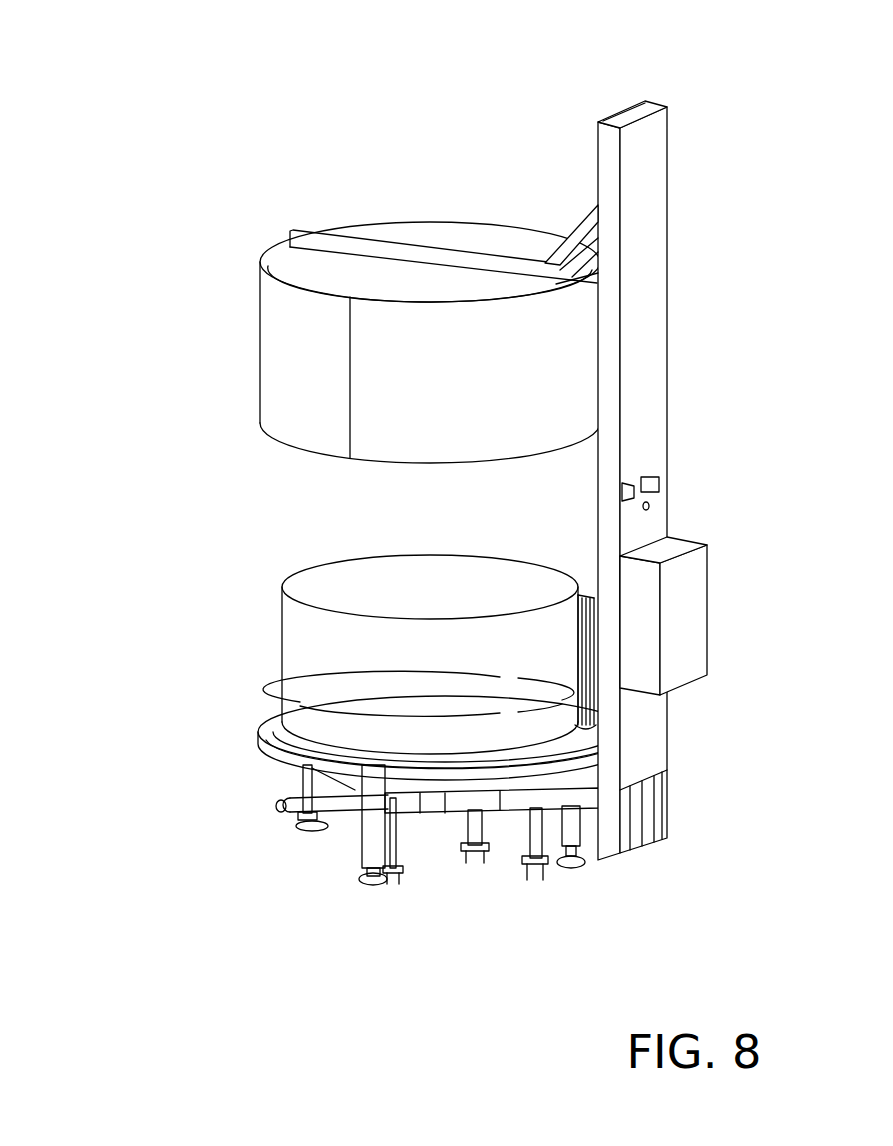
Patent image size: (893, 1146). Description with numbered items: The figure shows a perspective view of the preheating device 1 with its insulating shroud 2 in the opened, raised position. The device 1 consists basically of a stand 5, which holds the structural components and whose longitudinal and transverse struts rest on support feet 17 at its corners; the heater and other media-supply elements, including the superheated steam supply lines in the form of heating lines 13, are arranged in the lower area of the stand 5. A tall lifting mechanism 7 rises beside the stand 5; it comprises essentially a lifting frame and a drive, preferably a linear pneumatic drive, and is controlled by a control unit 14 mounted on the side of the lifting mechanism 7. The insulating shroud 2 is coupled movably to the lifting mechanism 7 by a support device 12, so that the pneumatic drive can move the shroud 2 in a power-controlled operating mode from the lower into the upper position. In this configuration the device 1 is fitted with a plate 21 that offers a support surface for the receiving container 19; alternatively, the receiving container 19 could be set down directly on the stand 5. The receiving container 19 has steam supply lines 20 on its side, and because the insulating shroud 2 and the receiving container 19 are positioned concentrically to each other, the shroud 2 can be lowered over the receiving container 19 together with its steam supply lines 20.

The preheating device 1 is at (300, 103).
The insulating shroud 2 is at (290, 353).
The stand 5 is at (567, 777).
The lifting mechanism 7 is at (702, 257).
The support device 12 is at (573, 233).
The heating lines 13 is at (270, 812).
The control unit 14 is at (693, 660).
The support feet 17 is at (377, 843).
The receiving container 19 is at (315, 650).
The steam supply lines 20 is at (590, 640).
The plate 21 is at (276, 752).